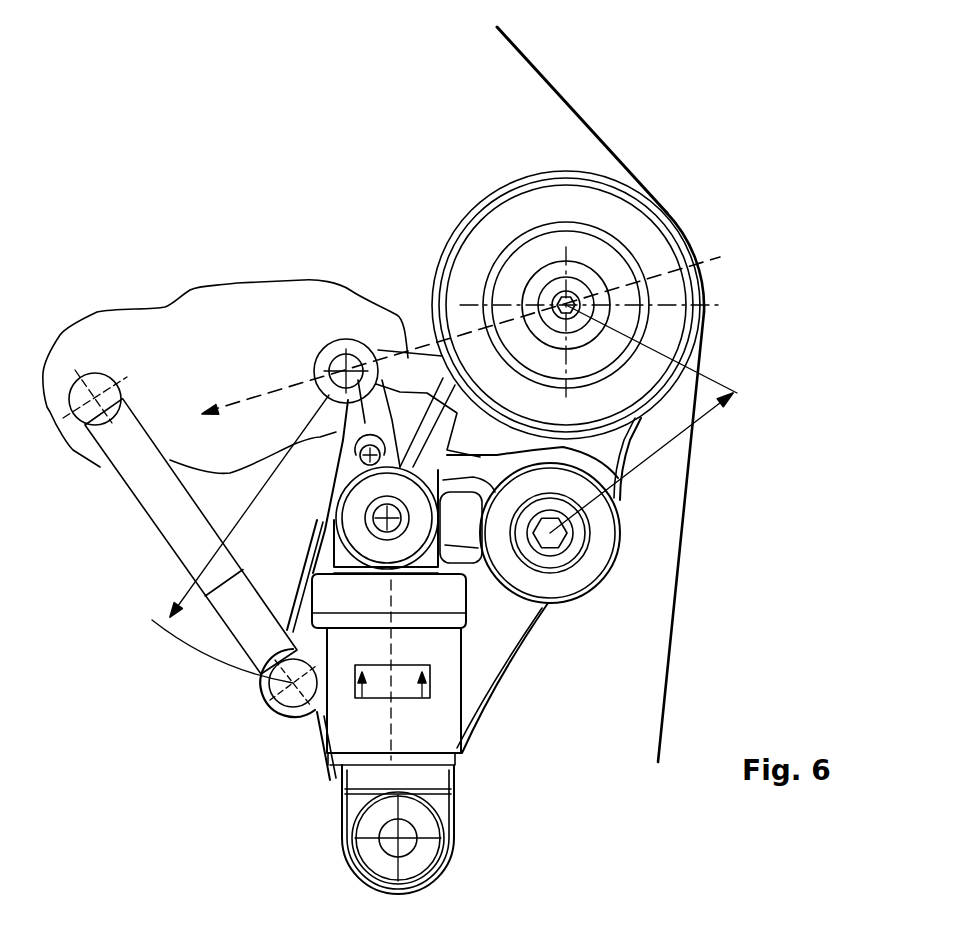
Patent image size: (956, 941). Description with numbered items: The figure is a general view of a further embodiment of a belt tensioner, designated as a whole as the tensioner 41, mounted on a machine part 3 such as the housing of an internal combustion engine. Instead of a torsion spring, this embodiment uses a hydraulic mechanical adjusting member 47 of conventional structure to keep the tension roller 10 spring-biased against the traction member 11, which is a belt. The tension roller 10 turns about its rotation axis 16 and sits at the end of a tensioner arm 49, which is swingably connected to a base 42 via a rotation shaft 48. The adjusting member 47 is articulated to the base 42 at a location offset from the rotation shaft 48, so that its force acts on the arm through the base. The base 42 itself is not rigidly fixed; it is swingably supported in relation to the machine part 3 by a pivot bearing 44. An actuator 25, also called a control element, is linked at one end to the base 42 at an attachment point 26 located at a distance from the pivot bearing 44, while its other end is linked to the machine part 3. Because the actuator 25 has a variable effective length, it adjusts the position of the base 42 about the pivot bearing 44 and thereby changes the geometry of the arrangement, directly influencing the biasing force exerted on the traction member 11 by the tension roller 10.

The machine part 3 is at (198, 312).
The tension roller 10 is at (672, 302).
The traction member 11 is at (585, 120).
The rotation axis 16 is at (566, 305).
The actuator 25 is at (165, 510).
The attachment point 26 is at (262, 690).
The tensioner 41 is at (442, 217).
The base 42 is at (497, 640).
The pivot bearing 44 is at (339, 345).
The hydraulic mechanical adjusting member 47 is at (443, 723).
The rotation shaft 48 is at (555, 535).
The tensioner arm 49 is at (623, 493).